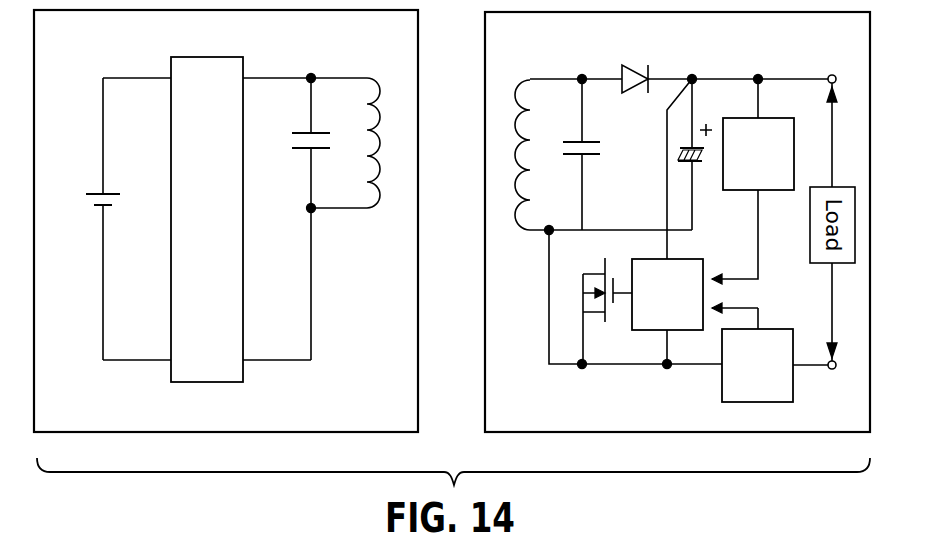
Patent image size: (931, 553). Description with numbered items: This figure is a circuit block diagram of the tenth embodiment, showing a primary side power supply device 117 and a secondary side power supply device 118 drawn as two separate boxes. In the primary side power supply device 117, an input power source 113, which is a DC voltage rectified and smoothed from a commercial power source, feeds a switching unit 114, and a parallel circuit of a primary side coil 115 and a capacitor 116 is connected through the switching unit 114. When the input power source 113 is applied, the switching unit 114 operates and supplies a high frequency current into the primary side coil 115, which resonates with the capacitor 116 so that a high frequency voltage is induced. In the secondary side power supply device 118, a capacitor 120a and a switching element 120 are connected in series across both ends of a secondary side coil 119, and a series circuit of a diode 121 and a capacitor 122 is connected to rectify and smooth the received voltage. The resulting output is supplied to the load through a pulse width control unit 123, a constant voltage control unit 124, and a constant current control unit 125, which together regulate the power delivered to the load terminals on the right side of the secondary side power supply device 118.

The input power source 113 is at (98, 193).
The switching unit 114 is at (170, 244).
The primary side coil 115 is at (374, 212).
The capacitor 116 is at (300, 153).
The primary side power supply device 117 is at (418, 150).
The secondary side power supply device 118 is at (485, 343).
The secondary side coil 119 is at (520, 241).
The switching element 120 is at (609, 318).
The capacitor 120a is at (602, 148).
The diode 121 is at (636, 63).
The capacitor 122 is at (682, 164).
The pulse width control unit 123 is at (683, 259).
The constant voltage control unit 124 is at (776, 118).
The constant current control unit 125 is at (793, 378).